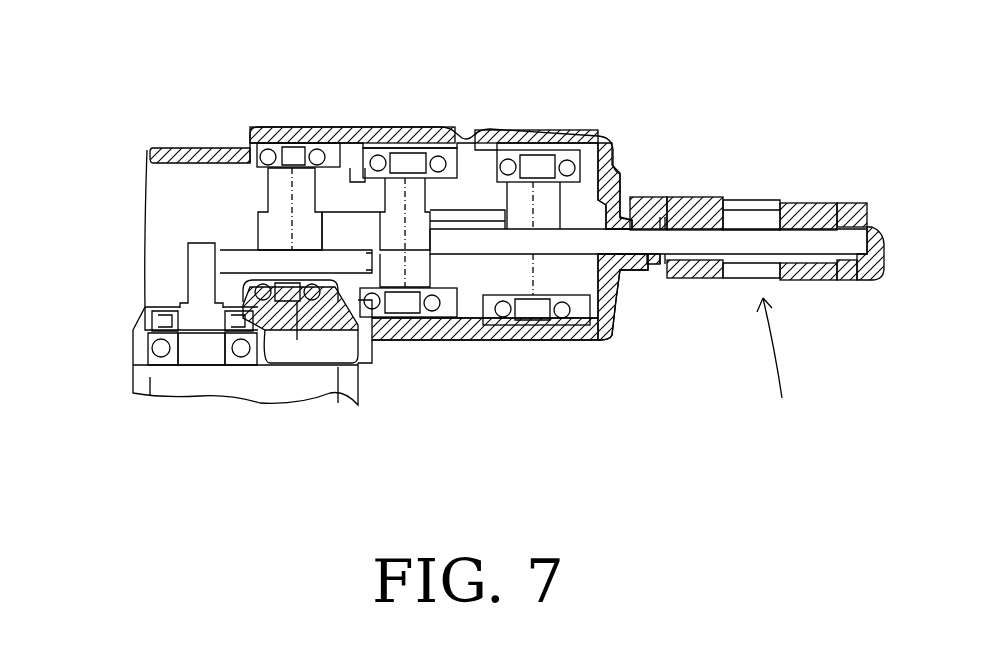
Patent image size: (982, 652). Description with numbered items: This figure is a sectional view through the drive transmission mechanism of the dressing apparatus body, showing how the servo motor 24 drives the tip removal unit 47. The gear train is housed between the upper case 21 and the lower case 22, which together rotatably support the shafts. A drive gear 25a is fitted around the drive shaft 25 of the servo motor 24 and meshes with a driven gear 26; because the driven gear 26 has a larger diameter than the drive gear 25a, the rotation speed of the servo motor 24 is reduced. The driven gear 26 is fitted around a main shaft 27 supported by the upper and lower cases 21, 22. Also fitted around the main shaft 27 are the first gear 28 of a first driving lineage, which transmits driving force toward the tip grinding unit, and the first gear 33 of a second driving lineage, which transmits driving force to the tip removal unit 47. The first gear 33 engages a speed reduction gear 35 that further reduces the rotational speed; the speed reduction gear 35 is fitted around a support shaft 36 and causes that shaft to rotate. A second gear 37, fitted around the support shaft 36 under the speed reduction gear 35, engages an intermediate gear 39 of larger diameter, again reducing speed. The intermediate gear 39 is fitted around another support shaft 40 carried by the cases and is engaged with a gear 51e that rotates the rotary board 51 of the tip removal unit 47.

The upper case 21 is at (517, 148).
The lower case 22 is at (485, 330).
The servo motor 24 is at (143, 413).
The drive shaft 25 is at (197, 368).
The drive gear 25a is at (186, 262).
The driven gear 26 is at (263, 225).
The main shaft 27 is at (297, 345).
The first gear of first driving lineage 28 is at (277, 187).
The first gear of second driving lineage 33 is at (267, 165).
The speed reduction gear 35 is at (357, 182).
The support shaft 36 is at (410, 320).
The second gear 37 is at (418, 150).
The intermediate gear 39 is at (582, 240).
The support shaft 40 is at (533, 328).
The tip removal unit 47 is at (775, 364).
The rotary board 51 is at (695, 280).
The gear 51e is at (663, 265).